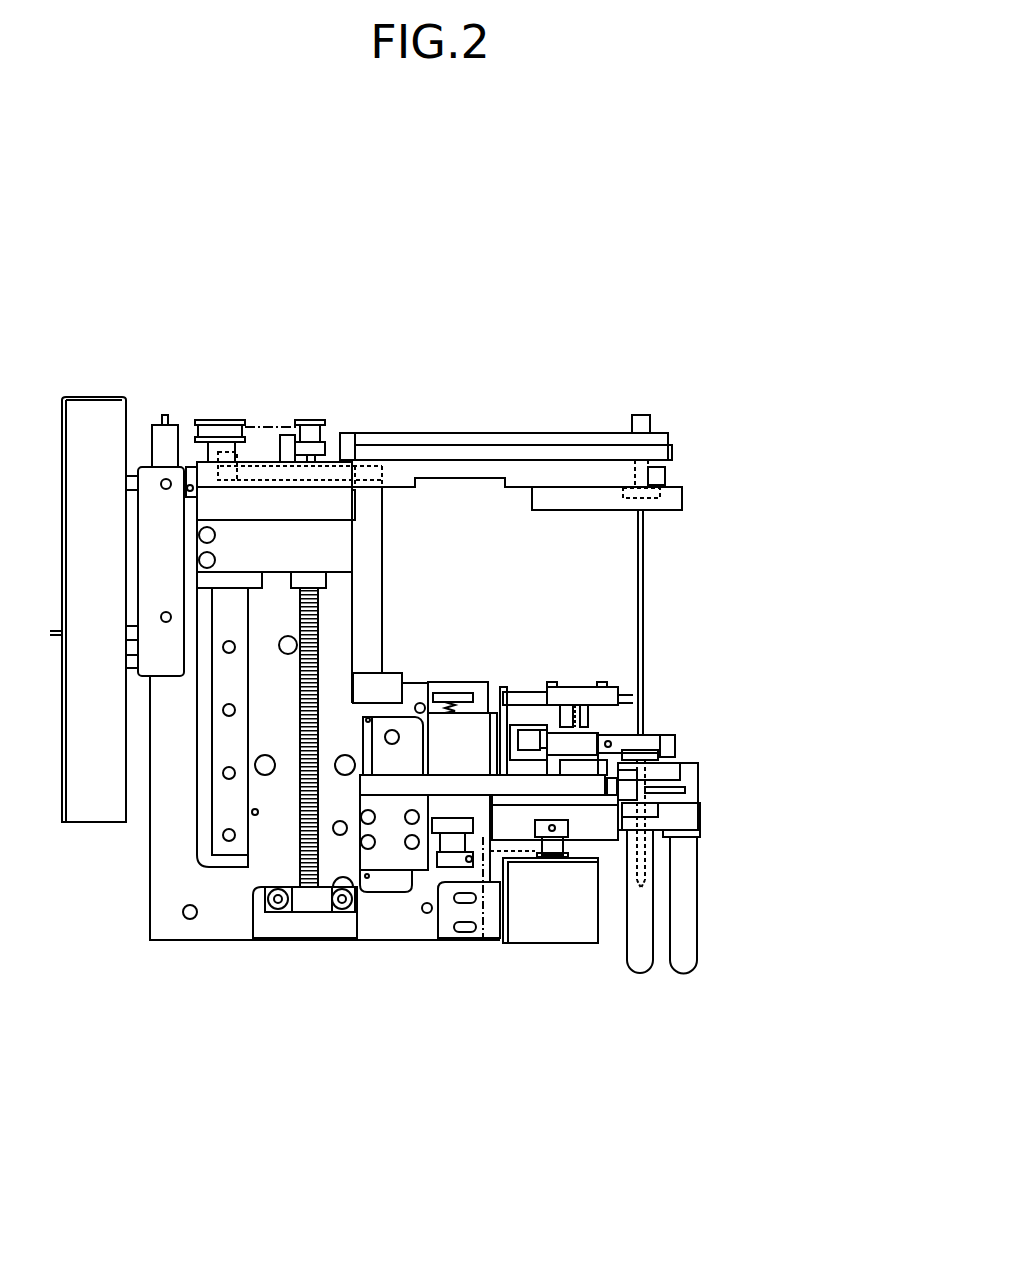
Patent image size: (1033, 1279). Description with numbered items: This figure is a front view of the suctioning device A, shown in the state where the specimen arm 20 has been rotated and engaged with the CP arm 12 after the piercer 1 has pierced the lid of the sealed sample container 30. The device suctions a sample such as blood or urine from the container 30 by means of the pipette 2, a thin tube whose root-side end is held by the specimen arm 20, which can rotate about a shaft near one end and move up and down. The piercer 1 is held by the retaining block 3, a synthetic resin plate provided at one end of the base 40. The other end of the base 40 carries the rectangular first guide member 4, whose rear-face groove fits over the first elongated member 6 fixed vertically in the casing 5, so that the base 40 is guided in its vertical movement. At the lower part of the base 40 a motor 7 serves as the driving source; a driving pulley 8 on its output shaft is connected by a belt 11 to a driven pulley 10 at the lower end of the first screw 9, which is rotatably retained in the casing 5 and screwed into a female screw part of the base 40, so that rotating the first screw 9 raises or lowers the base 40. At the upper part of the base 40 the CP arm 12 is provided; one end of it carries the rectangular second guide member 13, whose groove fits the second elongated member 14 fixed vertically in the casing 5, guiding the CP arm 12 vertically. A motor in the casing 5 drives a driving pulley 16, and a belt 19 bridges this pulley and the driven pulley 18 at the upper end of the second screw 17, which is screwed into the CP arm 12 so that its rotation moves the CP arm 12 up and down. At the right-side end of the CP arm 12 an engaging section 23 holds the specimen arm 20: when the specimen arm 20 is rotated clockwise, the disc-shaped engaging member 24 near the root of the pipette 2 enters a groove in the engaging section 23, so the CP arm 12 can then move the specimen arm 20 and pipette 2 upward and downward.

The suctioning device A is at (426, 290).
The piercer 1 is at (647, 860).
The pipette 2 is at (643, 620).
The retaining block 3 is at (653, 753).
The first guide member 4 is at (380, 860).
The casing 5 is at (353, 630).
The first elongated member 6 is at (395, 877).
The motor 7 is at (560, 928).
The driving pulley 8 is at (555, 843).
The first screw 9 is at (452, 703).
The driven pulley 10 is at (473, 853).
The belt 11 is at (483, 940).
The CP arm 12 is at (432, 468).
The second guide member 13 is at (310, 543).
The second elongated member 14 is at (225, 688).
The driving pulley 16 is at (222, 410).
The second screw 17 is at (300, 828).
The driven pulley 18 is at (315, 412).
The belt 19 is at (258, 405).
The specimen arm 20 is at (522, 438).
The engaging section 23 is at (678, 492).
The engaging member 24 is at (683, 507).
The sample container 30 is at (640, 950).
The base 40 is at (512, 785).